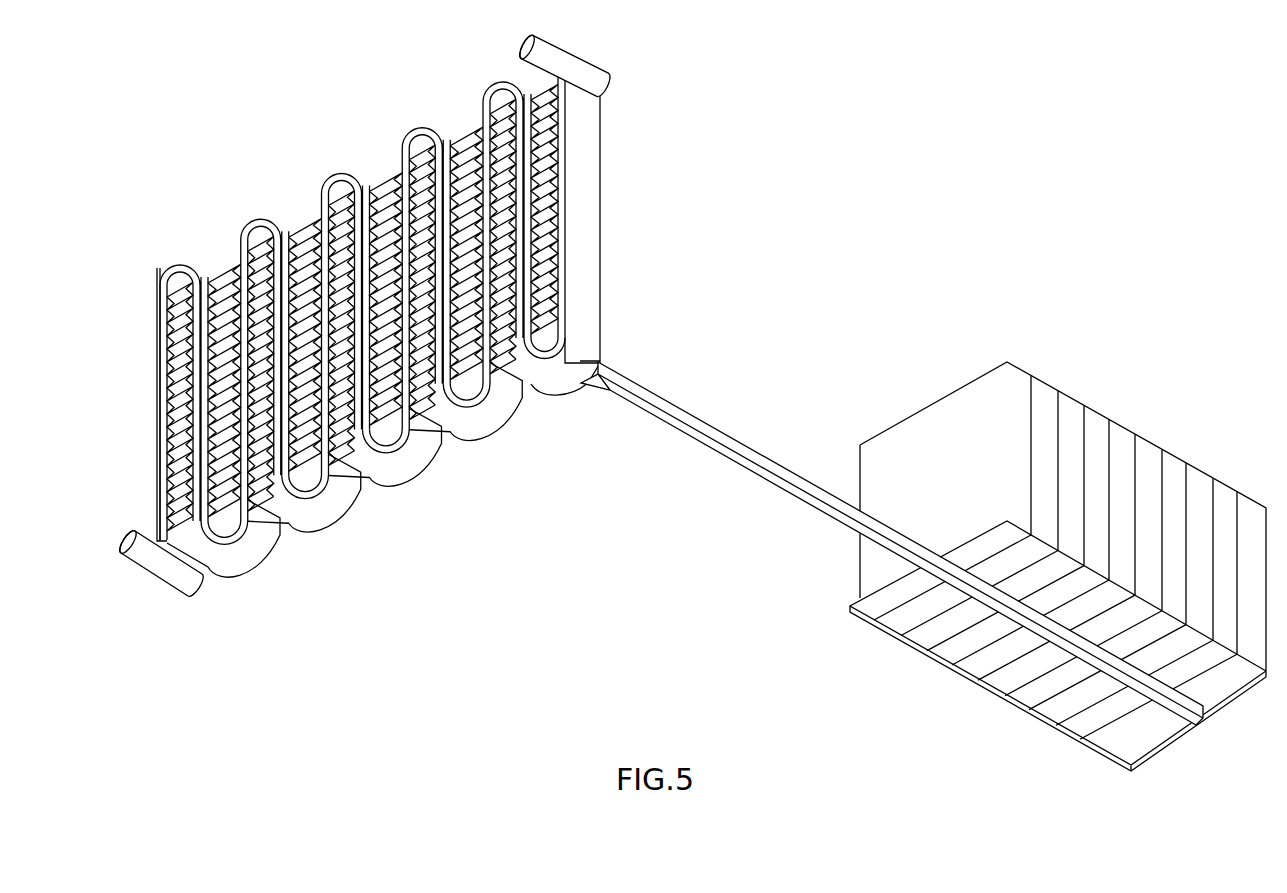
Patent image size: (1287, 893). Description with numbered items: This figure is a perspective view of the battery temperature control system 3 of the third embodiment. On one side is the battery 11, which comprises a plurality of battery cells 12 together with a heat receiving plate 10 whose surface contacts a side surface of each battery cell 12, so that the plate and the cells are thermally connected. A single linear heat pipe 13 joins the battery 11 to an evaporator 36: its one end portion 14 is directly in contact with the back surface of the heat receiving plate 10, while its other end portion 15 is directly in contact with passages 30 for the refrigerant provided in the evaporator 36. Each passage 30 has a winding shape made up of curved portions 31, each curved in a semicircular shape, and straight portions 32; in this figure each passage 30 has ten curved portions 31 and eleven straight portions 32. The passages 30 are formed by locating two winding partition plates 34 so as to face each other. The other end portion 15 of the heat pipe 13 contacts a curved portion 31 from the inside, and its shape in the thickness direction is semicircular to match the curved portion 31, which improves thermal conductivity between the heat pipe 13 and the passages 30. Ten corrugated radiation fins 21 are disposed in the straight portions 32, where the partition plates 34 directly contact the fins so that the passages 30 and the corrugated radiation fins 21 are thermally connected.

The battery temperature control system 3 is at (848, 241).
The heat receiving plate 10 is at (1225, 708).
The battery 11 is at (989, 301).
The battery cell 12 is at (1015, 394).
The heat pipe 13 is at (785, 485).
The one end portion 14 is at (1068, 655).
The other end portion 15 is at (540, 348).
The corrugated radiation fin 21 is at (182, 547).
The passage 30 is at (162, 317).
The curved portion 31 is at (180, 263).
The straight portion 32 is at (165, 390).
The partition plate 34 is at (563, 98).
The evaporator 36 is at (161, 470).